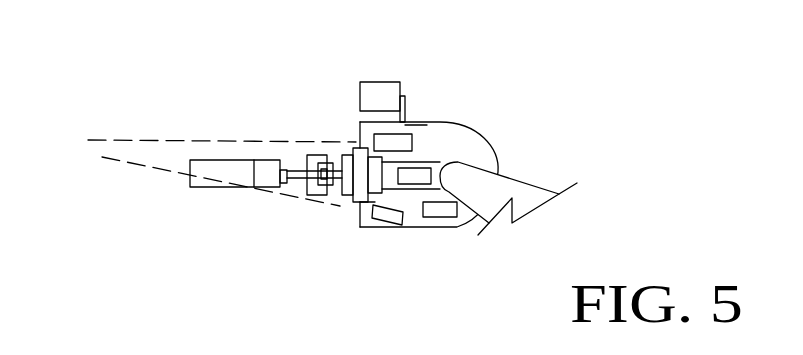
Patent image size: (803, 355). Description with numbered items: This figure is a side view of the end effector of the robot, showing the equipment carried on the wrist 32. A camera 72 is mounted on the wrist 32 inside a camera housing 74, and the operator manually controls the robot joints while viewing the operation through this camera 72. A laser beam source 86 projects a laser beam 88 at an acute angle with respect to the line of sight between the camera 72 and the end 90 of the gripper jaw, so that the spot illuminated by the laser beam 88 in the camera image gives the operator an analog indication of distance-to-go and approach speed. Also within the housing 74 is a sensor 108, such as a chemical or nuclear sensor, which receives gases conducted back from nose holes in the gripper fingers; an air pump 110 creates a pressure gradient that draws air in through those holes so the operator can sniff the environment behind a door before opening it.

The wrist 32 is at (498, 108).
The camera 72 is at (381, 144).
The camera housing 74 is at (492, 143).
The laser beam source 86 is at (380, 214).
The laser beam 88 is at (143, 165).
The end of the gripper jaw 90 is at (190, 177).
The sensor 108 is at (450, 214).
The air pump 110 is at (423, 174).